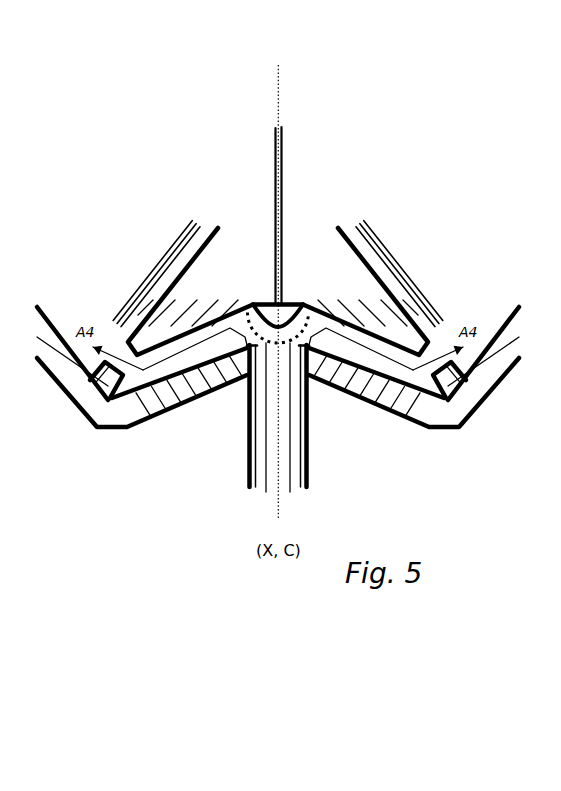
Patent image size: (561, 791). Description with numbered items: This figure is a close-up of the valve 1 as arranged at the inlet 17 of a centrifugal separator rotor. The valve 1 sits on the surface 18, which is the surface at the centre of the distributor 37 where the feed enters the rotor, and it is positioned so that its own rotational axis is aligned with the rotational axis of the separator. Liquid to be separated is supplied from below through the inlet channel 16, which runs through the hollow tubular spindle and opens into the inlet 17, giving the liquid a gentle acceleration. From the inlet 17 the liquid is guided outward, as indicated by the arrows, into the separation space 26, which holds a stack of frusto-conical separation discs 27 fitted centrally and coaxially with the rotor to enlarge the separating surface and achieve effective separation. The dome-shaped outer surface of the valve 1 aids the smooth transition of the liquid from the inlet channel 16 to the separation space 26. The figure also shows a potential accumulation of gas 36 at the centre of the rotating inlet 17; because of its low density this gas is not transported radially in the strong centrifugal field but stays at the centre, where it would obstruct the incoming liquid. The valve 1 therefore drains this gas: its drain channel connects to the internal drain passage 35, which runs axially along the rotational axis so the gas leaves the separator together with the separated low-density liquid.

The valve 1 is at (285, 302).
The inlet channel 16 is at (262, 437).
The inlet 17 is at (228, 372).
The surface 18 is at (267, 302).
The separation space 26 is at (122, 268).
The separation discs 27 is at (118, 306).
The internal drain passage 35 is at (284, 192).
The accumulation of gas 36 is at (284, 335).
The distributor 37 is at (315, 301).